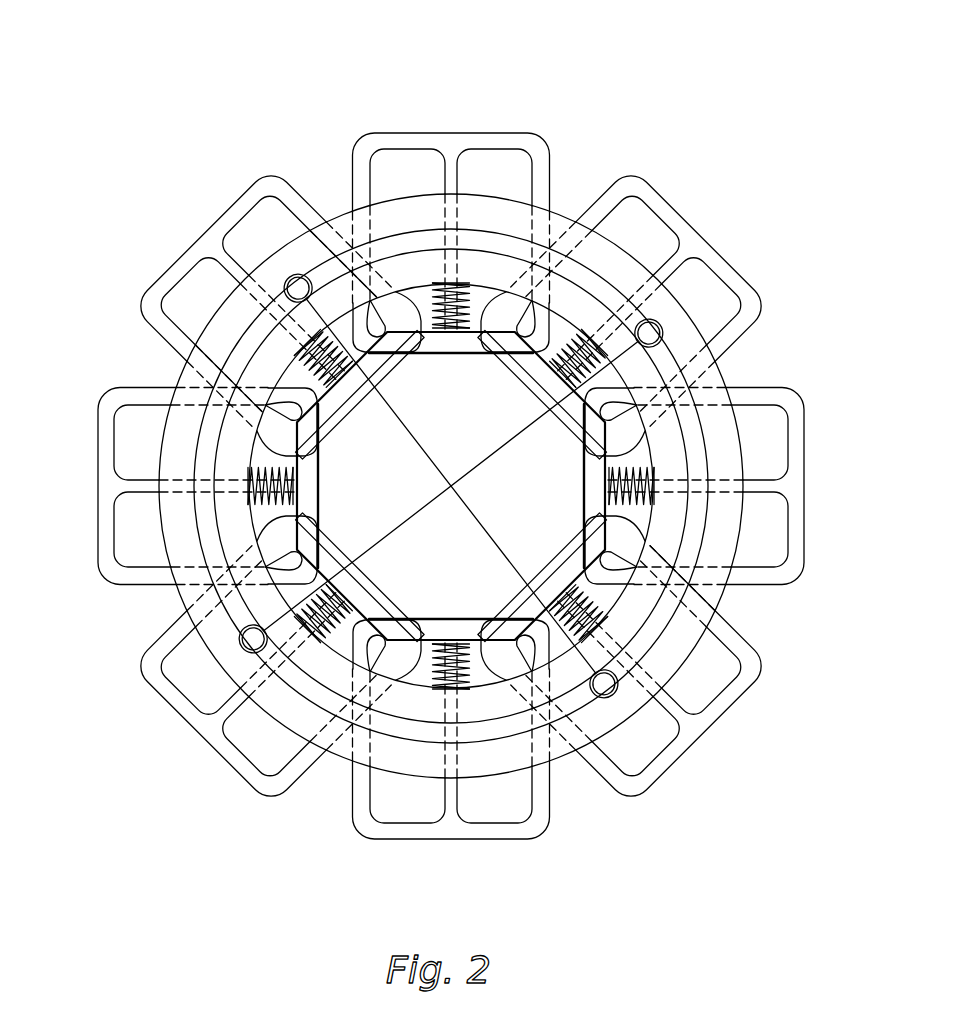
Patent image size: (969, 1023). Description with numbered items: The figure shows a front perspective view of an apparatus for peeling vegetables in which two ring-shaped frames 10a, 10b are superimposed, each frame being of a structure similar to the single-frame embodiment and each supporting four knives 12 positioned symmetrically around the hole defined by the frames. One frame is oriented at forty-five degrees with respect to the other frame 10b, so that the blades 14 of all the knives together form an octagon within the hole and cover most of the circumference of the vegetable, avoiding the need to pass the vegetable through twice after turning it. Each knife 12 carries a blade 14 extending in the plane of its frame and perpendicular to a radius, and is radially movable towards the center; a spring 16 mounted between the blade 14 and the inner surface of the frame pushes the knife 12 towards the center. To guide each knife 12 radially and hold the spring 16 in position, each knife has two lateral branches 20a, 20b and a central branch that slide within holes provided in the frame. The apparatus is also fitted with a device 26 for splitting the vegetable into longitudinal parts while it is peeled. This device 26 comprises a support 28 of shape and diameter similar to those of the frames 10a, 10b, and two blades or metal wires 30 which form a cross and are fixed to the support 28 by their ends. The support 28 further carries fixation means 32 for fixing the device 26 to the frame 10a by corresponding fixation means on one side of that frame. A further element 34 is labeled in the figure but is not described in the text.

The frame 10a is at (499, 486).
The frame 10b is at (492, 694).
The knife 12 is at (452, 458).
The blade 14 is at (451, 486).
The spring 16 is at (380, 463).
The lateral branch 20a is at (159, 356).
The lateral branch 20b is at (309, 217).
The device for splitting the vegetables 26 is at (451, 424).
The support 28 is at (451, 559).
The blades or metal wires 30 is at (450, 485).
The fixation means 32 is at (451, 553).
The pivot 34 is at (456, 548).